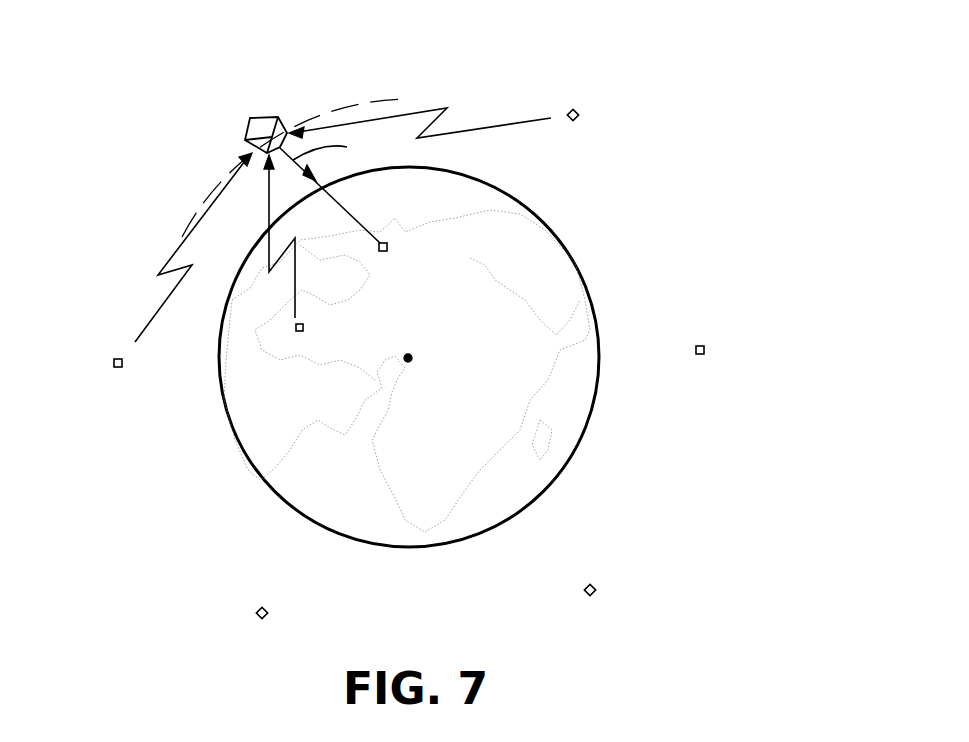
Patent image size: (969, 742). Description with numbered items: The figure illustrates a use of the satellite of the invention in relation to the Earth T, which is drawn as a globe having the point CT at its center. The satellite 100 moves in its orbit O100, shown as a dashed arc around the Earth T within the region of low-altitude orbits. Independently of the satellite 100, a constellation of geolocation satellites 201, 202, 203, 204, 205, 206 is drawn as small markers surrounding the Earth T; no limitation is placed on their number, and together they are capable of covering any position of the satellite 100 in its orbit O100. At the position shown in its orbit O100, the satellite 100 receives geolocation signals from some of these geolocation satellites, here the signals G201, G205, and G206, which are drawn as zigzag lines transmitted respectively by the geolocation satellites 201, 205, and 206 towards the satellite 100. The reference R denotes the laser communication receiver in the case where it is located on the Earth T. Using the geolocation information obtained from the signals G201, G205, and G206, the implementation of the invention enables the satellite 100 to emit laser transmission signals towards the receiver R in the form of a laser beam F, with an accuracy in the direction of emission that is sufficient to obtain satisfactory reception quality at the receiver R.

The satellite 100 is at (263, 127).
The geolocation satellite 201 is at (113, 360).
The geolocation satellite 202 is at (258, 608).
The geolocation satellite 203 is at (595, 588).
The geolocation satellite 204 is at (705, 352).
The geolocation satellite 205 is at (579, 112).
The geolocation satellite 206 is at (302, 331).
The Earth T is at (572, 257).
The center point of the Earth CT is at (410, 360).
The laser communication receiver R is at (389, 250).
The laser beam F is at (327, 149).
The orbit O100 is at (352, 102).
The geolocation signal G201 is at (173, 257).
The geolocation signal G205 is at (492, 127).
The geolocation signal G206 is at (295, 285).